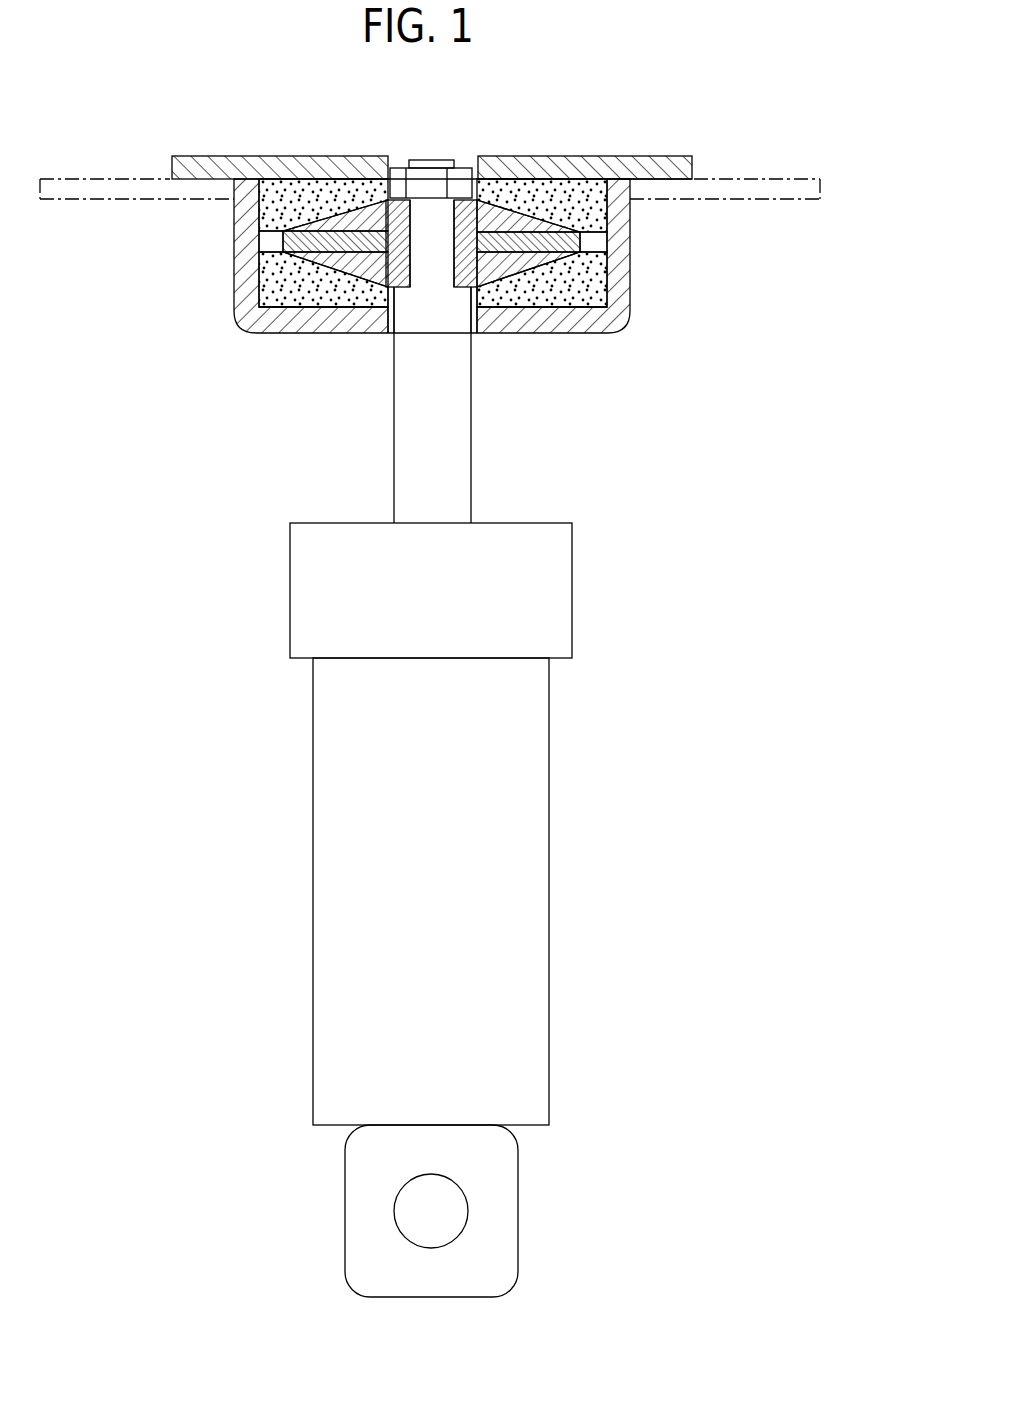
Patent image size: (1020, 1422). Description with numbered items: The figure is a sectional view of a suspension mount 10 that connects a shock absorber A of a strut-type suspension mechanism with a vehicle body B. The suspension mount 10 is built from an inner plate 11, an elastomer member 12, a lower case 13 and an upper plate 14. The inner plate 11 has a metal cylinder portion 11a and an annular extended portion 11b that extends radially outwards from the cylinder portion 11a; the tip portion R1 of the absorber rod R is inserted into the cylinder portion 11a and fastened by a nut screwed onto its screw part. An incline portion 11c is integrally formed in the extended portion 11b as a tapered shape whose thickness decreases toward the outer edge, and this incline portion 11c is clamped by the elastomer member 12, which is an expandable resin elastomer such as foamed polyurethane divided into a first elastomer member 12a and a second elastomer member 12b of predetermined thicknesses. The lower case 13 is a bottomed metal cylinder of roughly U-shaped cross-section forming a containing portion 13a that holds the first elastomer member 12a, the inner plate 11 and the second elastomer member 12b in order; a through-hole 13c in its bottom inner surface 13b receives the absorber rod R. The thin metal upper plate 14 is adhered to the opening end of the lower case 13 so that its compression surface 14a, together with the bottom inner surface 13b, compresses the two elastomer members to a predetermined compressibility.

The suspension mount 10 is at (248, 133).
The inner plate 11 is at (396, 251).
The cylinder portion 11a is at (389, 334).
The extended portion 11b is at (283, 236).
The incline portion 11c is at (345, 212).
The elastomer member 12 is at (373, 243).
The first elastomer member 12a is at (270, 262).
The second elastomer member 12b is at (270, 225).
The lower case 13 is at (467, 278).
The containing portion 13a is at (600, 237).
The bottom inner surface 13b is at (571, 300).
The through-hole 13c is at (477, 333).
The upper plate 14 is at (432, 142).
The compression surface 14a is at (534, 181).
The absorber rod R is at (408, 361).
The tip portion R1 is at (431, 282).
The shock absorber A is at (380, 748).
The vehicle body B is at (70, 172).